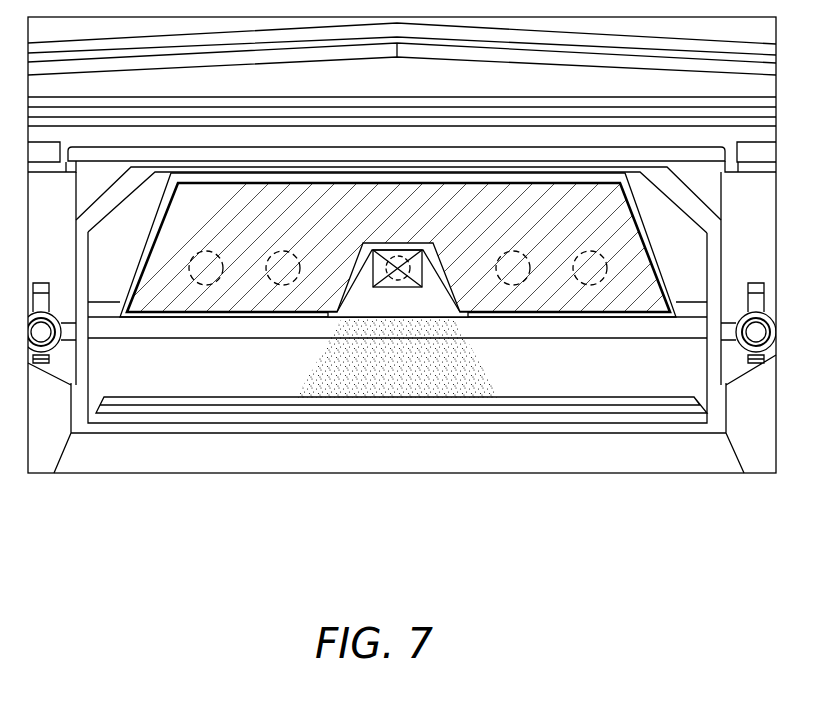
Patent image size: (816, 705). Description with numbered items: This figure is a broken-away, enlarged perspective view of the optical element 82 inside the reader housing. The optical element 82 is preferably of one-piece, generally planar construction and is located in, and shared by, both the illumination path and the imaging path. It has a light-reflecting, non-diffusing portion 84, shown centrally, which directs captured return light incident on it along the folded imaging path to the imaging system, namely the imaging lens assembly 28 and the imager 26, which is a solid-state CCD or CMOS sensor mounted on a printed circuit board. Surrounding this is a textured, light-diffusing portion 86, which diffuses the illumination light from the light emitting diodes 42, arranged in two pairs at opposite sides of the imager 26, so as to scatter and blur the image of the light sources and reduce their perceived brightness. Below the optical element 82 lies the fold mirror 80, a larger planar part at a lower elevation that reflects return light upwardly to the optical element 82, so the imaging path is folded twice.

The optical element 82 is at (360, 208).
The light-diffusing portion 86 is at (419, 193).
The light-reflecting portion 84 is at (432, 302).
The imaging lens assembly 28 is at (378, 287).
The imager 26 is at (409, 287).
The light emitting diodes 42 is at (204, 285).
The fold mirror 80 is at (386, 412).